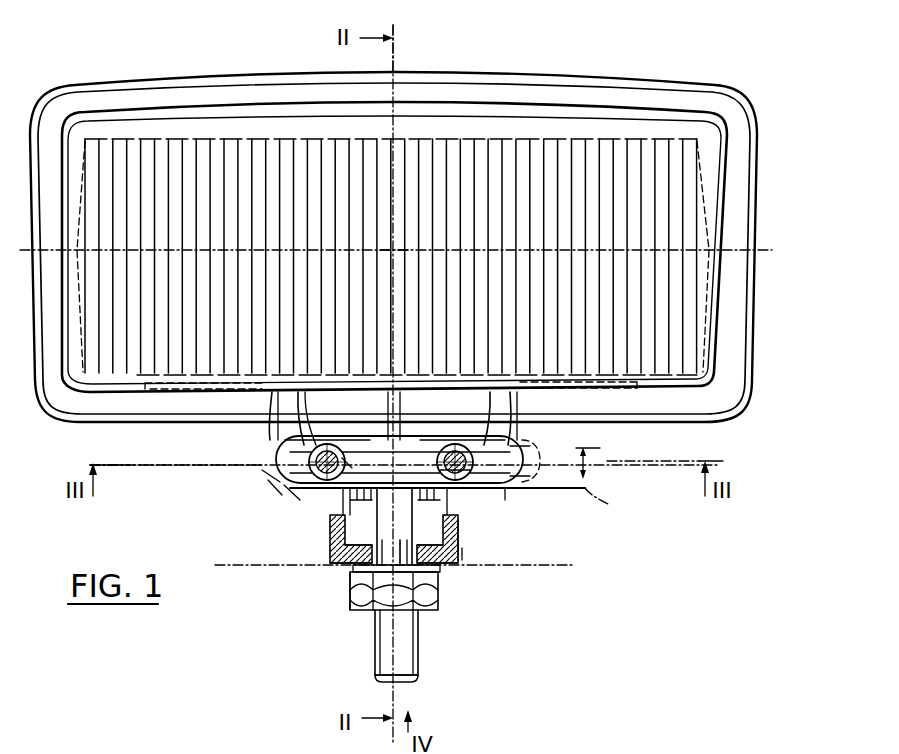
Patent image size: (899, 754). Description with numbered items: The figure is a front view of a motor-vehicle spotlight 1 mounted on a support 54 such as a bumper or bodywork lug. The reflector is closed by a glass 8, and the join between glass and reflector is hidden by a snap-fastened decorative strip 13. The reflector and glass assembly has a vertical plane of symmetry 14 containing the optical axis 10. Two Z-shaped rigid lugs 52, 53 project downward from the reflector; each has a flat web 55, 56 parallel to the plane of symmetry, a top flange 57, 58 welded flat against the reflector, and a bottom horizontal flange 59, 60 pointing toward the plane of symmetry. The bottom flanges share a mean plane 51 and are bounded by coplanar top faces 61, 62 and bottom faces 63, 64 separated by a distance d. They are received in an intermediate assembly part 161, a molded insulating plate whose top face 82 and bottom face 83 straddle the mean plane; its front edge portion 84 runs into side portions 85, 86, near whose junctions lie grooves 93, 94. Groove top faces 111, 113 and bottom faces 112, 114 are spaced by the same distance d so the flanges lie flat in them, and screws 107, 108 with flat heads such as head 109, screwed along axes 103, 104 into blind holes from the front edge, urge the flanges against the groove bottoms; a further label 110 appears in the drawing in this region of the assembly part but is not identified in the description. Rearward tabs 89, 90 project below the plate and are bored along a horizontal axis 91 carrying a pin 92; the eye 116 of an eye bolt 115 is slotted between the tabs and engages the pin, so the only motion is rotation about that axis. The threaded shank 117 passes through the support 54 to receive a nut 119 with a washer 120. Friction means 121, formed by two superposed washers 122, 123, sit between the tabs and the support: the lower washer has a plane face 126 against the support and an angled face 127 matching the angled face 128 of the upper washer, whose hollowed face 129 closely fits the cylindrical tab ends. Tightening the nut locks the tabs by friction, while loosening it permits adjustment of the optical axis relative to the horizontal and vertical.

The spotlight 1 is at (67, 70).
The glass 8 is at (607, 146).
The optical axis 10 is at (395, 248).
The decorative strip 13 is at (510, 86).
The vertical plane of symmetry 14 is at (395, 64).
The mean plane 51 is at (148, 468).
The rigid lug 52 is at (260, 473).
The rigid lug 53 is at (560, 444).
The support 54 is at (580, 566).
The flat web 55 is at (258, 415).
The flat web 56 is at (548, 383).
The top flange 57 is at (170, 383).
The top flange 58 is at (590, 382).
The bottom horizontal flange 59 is at (300, 395).
The bottom horizontal flange 60 is at (492, 395).
The flat top face 61 is at (324, 440).
The flat top face 62 is at (511, 398).
The flat bottom face 63 is at (292, 500).
The flat bottom face 64 is at (480, 498).
The top face 82 is at (437, 412).
The bottom face 83 is at (466, 520).
The front edge plane portion 84 is at (401, 440).
The side portion 85 is at (278, 400).
The side portion 86 is at (530, 422).
The rearwardly extending tab 89 is at (348, 506).
The rearwardly extending tab 90 is at (451, 562).
The common horizontal axis 91 is at (595, 498).
The pin 92 is at (401, 562).
The groove 93 is at (268, 481).
The groove 94 is at (525, 476).
The axis 103 is at (366, 445).
The axis 104 is at (456, 446).
The screw 107 is at (331, 512).
The screw 108 is at (440, 461).
The flat head 109 is at (356, 465).
The bracket channel 110 is at (440, 472).
The top face 111 is at (265, 461).
The bottom face 112 is at (285, 486).
The top face 113 is at (530, 449).
The bottom face 114 is at (512, 489).
The eye bolt 115 is at (426, 664).
The eye 116 is at (346, 567).
The threaded shank 117 is at (372, 666).
The nut 119 is at (364, 625).
The washer 120 is at (355, 608).
The friction means 121 is at (322, 563).
The washer 122 is at (467, 557).
The washer 123 is at (483, 540).
The plane annular face 126 is at (465, 552).
The plane annular face 127 is at (470, 548).
The plane annular face 128 is at (445, 574).
The hollowed out face 129 is at (445, 522).
The intermediate assembly part 161 is at (306, 495).
The distance d is at (589, 464).